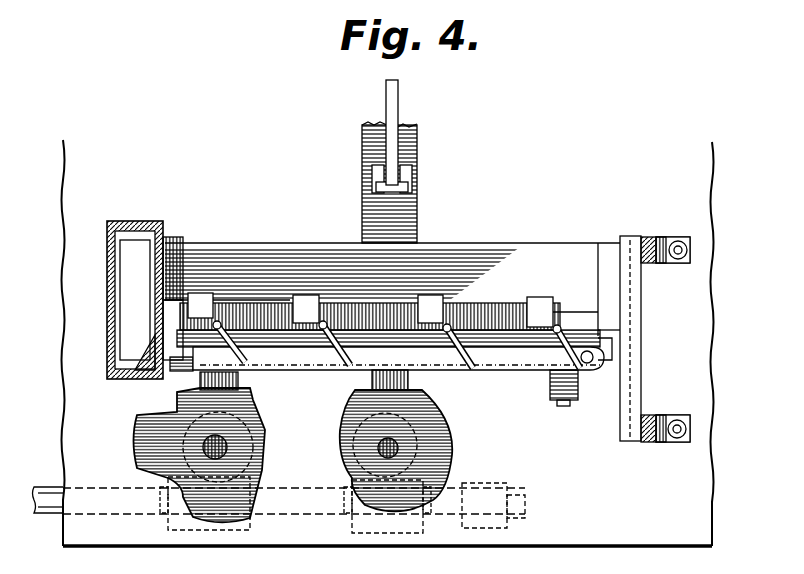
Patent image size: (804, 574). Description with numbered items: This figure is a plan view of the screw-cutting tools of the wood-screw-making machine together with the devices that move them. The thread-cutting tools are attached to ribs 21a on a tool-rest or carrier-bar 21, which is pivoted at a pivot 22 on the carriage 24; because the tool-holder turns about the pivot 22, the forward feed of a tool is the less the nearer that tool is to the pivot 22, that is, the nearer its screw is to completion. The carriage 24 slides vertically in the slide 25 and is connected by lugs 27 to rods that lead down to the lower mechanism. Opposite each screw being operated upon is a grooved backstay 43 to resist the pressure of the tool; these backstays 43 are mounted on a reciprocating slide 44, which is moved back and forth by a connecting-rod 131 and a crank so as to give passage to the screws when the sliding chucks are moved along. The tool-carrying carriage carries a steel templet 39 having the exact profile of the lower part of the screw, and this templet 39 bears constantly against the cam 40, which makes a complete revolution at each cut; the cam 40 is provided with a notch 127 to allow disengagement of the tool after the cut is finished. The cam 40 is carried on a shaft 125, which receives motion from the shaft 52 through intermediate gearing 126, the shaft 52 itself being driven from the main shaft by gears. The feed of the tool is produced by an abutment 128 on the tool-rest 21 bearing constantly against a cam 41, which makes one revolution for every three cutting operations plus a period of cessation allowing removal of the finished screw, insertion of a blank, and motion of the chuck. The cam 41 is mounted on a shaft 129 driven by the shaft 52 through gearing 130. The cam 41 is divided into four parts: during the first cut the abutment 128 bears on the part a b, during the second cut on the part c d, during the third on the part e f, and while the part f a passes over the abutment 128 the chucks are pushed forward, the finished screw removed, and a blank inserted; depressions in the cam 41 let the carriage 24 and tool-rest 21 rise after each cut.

The connecting-rod 131 is at (399, 98).
The reciprocating slide 44 is at (510, 258).
The grooved backstay 43 is at (440, 302).
The slide 25 is at (486, 322).
The carriage 24 is at (612, 348).
The tool-rest 21 is at (390, 350).
The ribs 21a is at (345, 358).
The pivot 22 is at (588, 366).
The lugs 27 is at (550, 388).
The abutment 128 is at (240, 378).
The steel templet 39 is at (410, 380).
The shaft 52 is at (273, 489).
The cam 41 is at (140, 452).
The shaft 129 is at (240, 444).
The gearing 130 is at (240, 535).
The cam 40 is at (450, 435).
The notch 127 is at (340, 456).
The shaft 125 is at (398, 452).
The intermediate gearing 126 is at (396, 536).
The cam part point a is at (242, 386).
The cam part point b is at (200, 378).
The cam part point c is at (160, 414).
The cam part point d is at (150, 480).
The cam part point e is at (200, 522).
The cam part point f is at (254, 514).